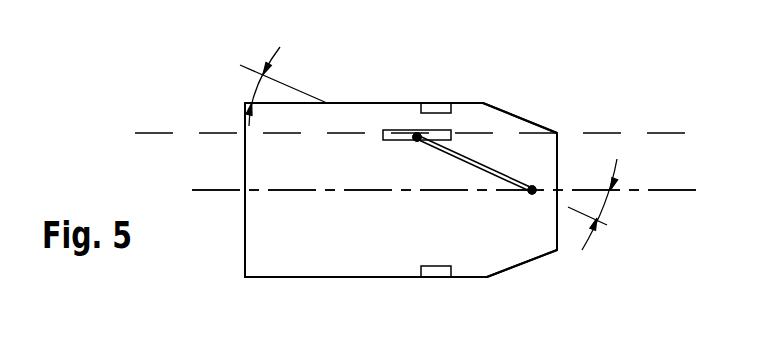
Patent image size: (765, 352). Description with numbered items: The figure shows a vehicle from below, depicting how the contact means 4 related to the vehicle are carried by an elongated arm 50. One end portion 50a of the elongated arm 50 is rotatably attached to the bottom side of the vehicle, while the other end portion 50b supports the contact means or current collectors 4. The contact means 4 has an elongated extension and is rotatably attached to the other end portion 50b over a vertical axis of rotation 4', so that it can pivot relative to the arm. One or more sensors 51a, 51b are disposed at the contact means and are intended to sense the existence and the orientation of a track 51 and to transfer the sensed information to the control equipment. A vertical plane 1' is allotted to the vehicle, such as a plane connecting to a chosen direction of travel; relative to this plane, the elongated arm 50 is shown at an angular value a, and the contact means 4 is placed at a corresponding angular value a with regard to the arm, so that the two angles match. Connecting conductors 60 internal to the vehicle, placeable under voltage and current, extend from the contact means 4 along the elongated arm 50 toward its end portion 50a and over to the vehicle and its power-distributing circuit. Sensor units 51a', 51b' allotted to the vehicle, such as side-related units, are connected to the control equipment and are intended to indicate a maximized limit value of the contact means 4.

The vertical plane 1' is at (443, 214).
The contact means 4 is at (297, 150).
The vertical axis of rotation 4' is at (413, 89).
The elongated arm 50 is at (468, 158).
The connecting conductors 60 is at (509, 130).
The end portion of the arm 50a is at (532, 194).
The other end portion of the arm 50b is at (416, 139).
The track 51 is at (608, 132).
The sensor 51a is at (393, 71).
The sensor 51b is at (420, 143).
The sensor unit 51a' is at (463, 73).
The sensor unit 51b' is at (450, 298).
The angular value a is at (431, 148).